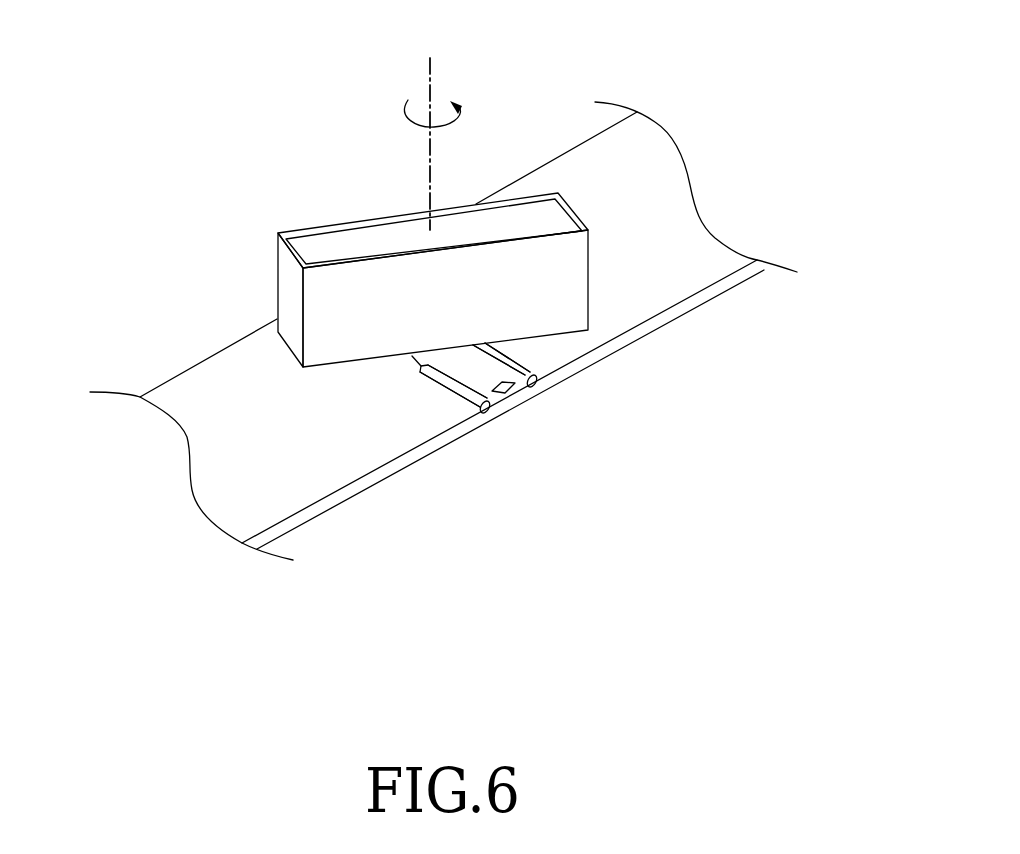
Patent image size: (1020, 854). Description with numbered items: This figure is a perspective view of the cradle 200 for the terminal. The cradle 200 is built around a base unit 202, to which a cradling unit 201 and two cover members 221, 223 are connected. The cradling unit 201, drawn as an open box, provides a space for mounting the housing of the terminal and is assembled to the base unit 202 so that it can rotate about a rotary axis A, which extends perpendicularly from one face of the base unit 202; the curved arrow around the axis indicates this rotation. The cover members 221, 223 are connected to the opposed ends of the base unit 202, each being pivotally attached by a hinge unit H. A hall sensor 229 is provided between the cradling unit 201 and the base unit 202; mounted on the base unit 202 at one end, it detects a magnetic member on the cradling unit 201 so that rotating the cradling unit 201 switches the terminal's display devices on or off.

The cradle 200 is at (290, 121).
The cradling unit 201 is at (313, 294).
The base unit 202 is at (460, 385).
The cover member 221 is at (687, 245).
The cover member 223 is at (227, 477).
The hall sensor 229 is at (520, 396).
The hinge unit H is at (520, 373).
The rotary axis A is at (432, 90).